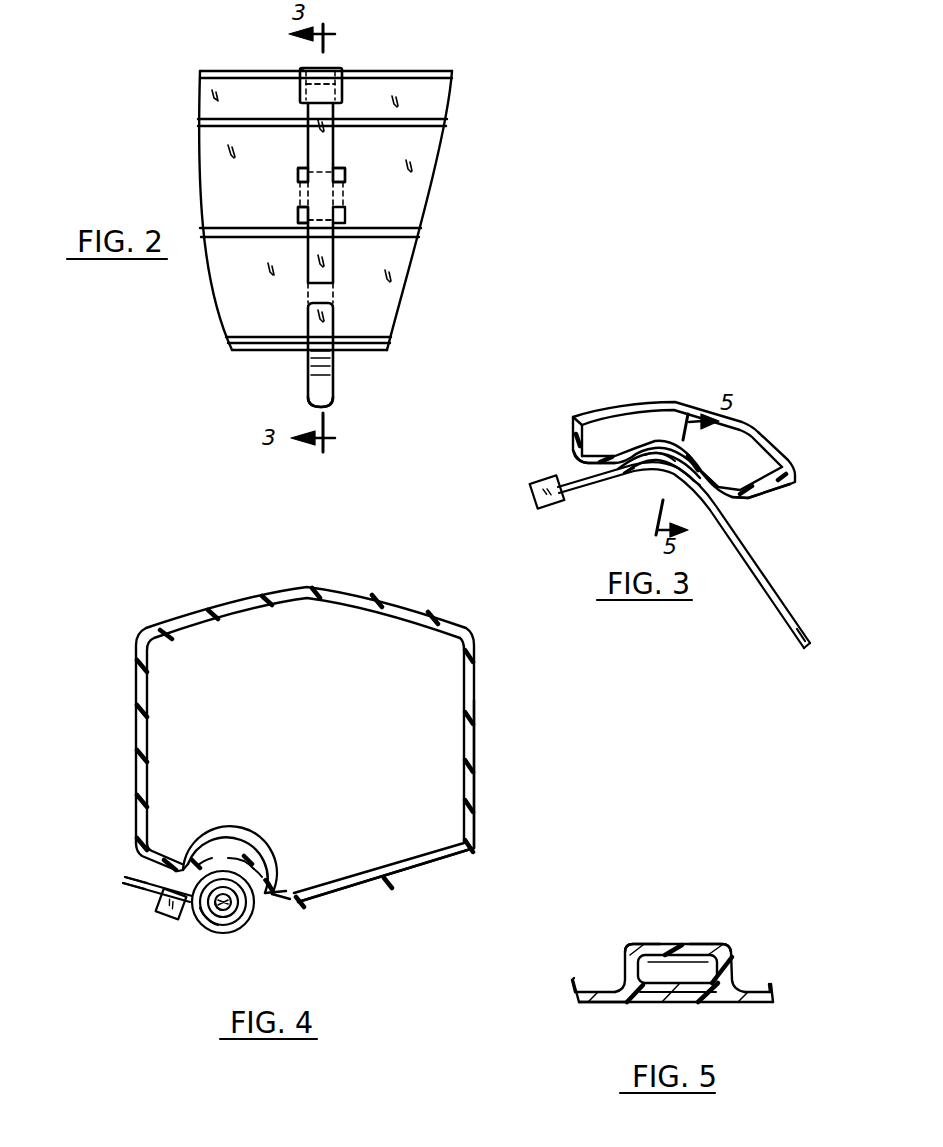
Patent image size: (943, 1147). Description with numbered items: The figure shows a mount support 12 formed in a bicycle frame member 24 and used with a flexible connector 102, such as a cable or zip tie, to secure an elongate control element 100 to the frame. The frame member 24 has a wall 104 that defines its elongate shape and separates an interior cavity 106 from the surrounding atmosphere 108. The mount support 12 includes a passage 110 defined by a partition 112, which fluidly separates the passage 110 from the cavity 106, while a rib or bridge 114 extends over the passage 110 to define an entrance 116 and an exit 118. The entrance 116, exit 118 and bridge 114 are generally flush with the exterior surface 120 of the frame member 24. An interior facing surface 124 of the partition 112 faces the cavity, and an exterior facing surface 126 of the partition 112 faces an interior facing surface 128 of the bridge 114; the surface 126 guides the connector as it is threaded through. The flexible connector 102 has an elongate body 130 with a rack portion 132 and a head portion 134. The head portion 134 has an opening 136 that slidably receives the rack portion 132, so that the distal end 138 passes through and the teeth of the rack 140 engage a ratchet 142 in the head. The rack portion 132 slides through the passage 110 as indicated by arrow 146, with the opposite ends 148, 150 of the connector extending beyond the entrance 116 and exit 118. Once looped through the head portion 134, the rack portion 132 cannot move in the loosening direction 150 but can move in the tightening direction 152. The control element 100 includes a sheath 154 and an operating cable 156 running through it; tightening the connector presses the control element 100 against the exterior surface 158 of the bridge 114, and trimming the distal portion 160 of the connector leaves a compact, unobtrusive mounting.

In FIG. 2, the mount support 12 is at (298, 188).
In FIG. 3, the mount support 12 is at (637, 457).
In FIG. 4, the mount support 12 is at (286, 861).
In FIG. 5, the mount support 12 is at (733, 949).
In FIG. 2, the bicycle frame member 24 is at (427, 196).
In FIG. 3, the bicycle frame member 24 is at (787, 466).
In FIG. 4, the bicycle frame member 24 is at (400, 602).
In FIG. 5, the bicycle frame member 24 is at (755, 978).
In FIG. 4, the elongate control element 100 is at (230, 917).
In FIG. 2, the flexible connector 102 is at (323, 336).
In FIG. 3, the flexible connector 102 is at (758, 555).
In FIG. 4, the flexible connector 102 is at (247, 915).
In FIG. 3, the wall 104 is at (775, 490).
In FIG. 4, the wall 104 is at (474, 786).
In FIG. 5, the wall 104 is at (600, 1000).
In FIG. 3, the interior cavity 106 is at (767, 464).
In FIG. 4, the interior cavity 106 is at (351, 740).
In FIG. 5, the interior cavity 106 is at (719, 914).
In FIG. 3, the atmosphere 108 is at (795, 534).
In FIG. 4, the atmosphere 108 is at (548, 738).
In FIG. 5, the atmosphere 108 is at (781, 1032).
In FIG. 2, the passage 110 is at (343, 172).
In FIG. 3, the passage 110 is at (653, 458).
In FIG. 4, the passage 110 is at (256, 906).
In FIG. 5, the passage 110 is at (708, 965).
In FIG. 3, the partition 112 is at (702, 457).
In FIG. 4, the partition 112 is at (211, 850).
In FIG. 5, the partition 112 is at (650, 946).
In FIG. 2, the bridge 114 is at (313, 199).
In FIG. 3, the bridge 114 is at (663, 458).
In FIG. 4, the bridge 114 is at (251, 865).
In FIG. 5, the bridge 114 is at (677, 997).
In FIG. 2, the entrance 116 is at (300, 172).
In FIG. 3, the entrance 116 is at (633, 480).
In FIG. 2, the exit 118 is at (300, 224).
In FIG. 3, the exit 118 is at (704, 494).
In FIG. 3, the exterior surface 120 is at (585, 463).
In FIG. 4, the exterior surface 120 is at (377, 880).
In FIG. 4, the interior facing surface 124 is at (264, 869).
In FIG. 4, the exterior facing surface 126 is at (274, 886).
In FIG. 4, the interior facing surface 128 is at (237, 868).
In FIG. 2, the elongate body 130 is at (323, 263).
In FIG. 2, the rack portion 132 is at (310, 372).
In FIG. 3, the rack portion 132 is at (793, 622).
In FIG. 4, the rack portion 132 is at (217, 931).
In FIG. 2, the head portion 134 is at (342, 71).
In FIG. 3, the head portion 134 is at (534, 497).
In FIG. 4, the head portion 134 is at (166, 918).
In FIG. 2, the opening 136 is at (298, 63).
In FIG. 2, the distal end 138 is at (317, 401).
In FIG. 2, the rack 140 is at (327, 362).
In FIG. 2, the ratchet 142 is at (318, 89).
In FIG. 3, the arrow 146 is at (600, 495).
In FIG. 3, the end 148 is at (522, 485).
In FIG. 3, the loosening direction 150 is at (811, 616).
In FIG. 4, the loosening direction 150 is at (122, 984).
In FIG. 4, the tightening direction 152 is at (98, 946).
In FIG. 4, the sheath 154 is at (203, 928).
In FIG. 4, the operating cable 156 is at (231, 924).
In FIG. 4, the exterior surface 158 is at (179, 869).
In FIG. 4, the distal portion 160 is at (143, 896).